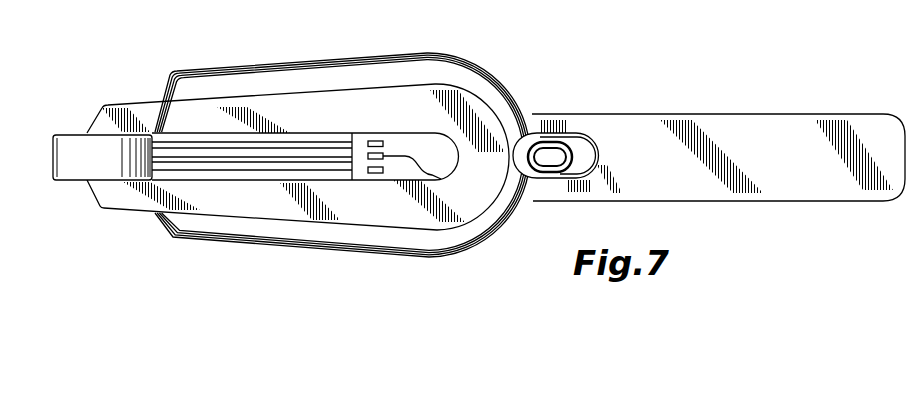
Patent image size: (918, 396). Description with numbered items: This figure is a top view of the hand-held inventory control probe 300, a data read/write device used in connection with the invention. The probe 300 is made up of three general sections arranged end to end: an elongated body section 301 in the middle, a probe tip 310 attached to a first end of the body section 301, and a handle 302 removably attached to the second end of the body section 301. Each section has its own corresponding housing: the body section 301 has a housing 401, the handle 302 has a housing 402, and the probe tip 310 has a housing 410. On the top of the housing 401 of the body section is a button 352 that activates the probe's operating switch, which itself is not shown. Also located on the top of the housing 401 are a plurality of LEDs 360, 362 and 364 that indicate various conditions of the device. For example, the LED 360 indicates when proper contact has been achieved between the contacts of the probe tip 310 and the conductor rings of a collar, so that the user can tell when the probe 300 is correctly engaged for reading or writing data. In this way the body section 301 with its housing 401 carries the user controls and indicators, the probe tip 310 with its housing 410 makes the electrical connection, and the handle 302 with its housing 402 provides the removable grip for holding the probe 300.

The inventory control probe 300 is at (590, 73).
The body section 301 is at (290, 62).
The handle 302 is at (686, 111).
The probe tip 310 is at (66, 130).
The button 352 is at (549, 152).
The LED 360 is at (374, 174).
The LED 362 is at (448, 172).
The LED 364 is at (375, 140).
The housing 401 is at (430, 128).
The housing 402 is at (797, 171).
The housing 410 is at (116, 171).